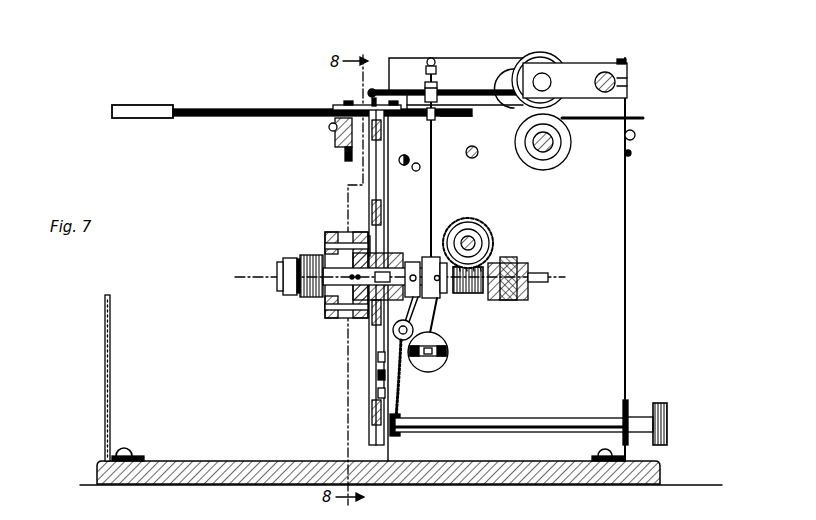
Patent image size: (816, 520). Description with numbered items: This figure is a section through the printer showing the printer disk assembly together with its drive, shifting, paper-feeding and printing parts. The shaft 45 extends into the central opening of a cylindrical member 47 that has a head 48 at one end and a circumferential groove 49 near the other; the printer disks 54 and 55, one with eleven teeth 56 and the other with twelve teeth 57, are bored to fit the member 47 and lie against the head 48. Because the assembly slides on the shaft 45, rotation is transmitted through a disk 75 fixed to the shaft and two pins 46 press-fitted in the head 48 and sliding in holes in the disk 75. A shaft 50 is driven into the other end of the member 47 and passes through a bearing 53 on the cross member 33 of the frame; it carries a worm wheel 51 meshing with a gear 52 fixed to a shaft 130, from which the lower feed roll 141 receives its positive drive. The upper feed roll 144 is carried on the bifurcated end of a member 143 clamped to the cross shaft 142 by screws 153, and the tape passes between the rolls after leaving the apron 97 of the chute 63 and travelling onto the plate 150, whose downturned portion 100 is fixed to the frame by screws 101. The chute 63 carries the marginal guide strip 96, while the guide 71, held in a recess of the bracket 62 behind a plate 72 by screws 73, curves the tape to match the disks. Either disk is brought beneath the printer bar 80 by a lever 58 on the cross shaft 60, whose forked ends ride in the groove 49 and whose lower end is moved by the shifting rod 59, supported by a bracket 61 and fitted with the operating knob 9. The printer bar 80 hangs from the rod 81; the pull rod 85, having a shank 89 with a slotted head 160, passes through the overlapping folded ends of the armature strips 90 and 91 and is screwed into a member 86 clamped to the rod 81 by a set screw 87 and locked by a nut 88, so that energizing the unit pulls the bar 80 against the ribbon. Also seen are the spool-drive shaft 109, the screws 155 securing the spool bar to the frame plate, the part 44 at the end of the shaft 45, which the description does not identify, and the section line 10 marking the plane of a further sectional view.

The operating knob 9 is at (668, 416).
The shaft 10 is at (398, 268).
The cross member 33 is at (512, 258).
The knob 44 is at (288, 297).
The shaft 45 is at (315, 300).
The pins 46 is at (369, 332).
The cylindrical member 47 is at (410, 260).
The head 48 is at (360, 235).
The circumferential groove 49 is at (431, 256).
The shaft 50 is at (540, 274).
The worm wheel 51 is at (475, 292).
The gear 52 is at (490, 228).
The bearing 53 is at (522, 296).
The printer disk 54 is at (377, 374).
The printer disk 55 is at (377, 357).
The teeth 56 is at (377, 392).
The teeth 57 is at (389, 423).
The shifting lever 58 is at (400, 400).
The shifting rod 59 is at (500, 417).
The cross shaft 60 is at (406, 310).
The bracket 61 is at (622, 410).
The bracket 62 is at (348, 148).
The chute 63 is at (143, 119).
The guide 71 is at (348, 104).
The plate 72 is at (360, 163).
The screws 73 is at (331, 132).
The disk 75 is at (330, 235).
The printer bar 80 is at (371, 92).
The rod 81 is at (462, 90).
The pull rod 85 is at (433, 178).
The member 86 is at (437, 105).
The set screw 87 is at (434, 61).
The nut 88 is at (436, 122).
The shank 89 is at (432, 336).
The tapering metal strip 90 is at (409, 366).
The tapering metal strip 91 is at (449, 352).
The marginal strip 96 is at (268, 108).
The apron 97 is at (470, 118).
The downturned portion 100 is at (632, 153).
The screw 101 is at (636, 135).
The shaft 109 is at (477, 156).
The shaft 130 is at (470, 240).
The lower feed roll 141 is at (556, 160).
The cross shaft 142 is at (540, 77).
The member 143 is at (580, 67).
The upper feed roll 144 is at (547, 53).
The plate 150 is at (602, 120).
The screws 153 is at (626, 59).
The screws 155 is at (407, 170).
The head 160 is at (440, 365).